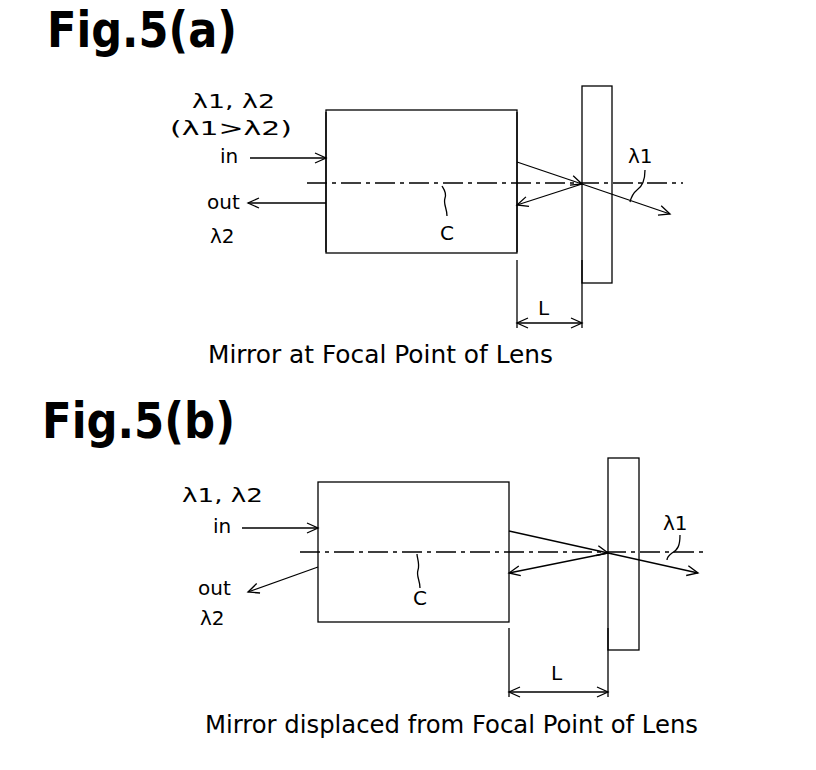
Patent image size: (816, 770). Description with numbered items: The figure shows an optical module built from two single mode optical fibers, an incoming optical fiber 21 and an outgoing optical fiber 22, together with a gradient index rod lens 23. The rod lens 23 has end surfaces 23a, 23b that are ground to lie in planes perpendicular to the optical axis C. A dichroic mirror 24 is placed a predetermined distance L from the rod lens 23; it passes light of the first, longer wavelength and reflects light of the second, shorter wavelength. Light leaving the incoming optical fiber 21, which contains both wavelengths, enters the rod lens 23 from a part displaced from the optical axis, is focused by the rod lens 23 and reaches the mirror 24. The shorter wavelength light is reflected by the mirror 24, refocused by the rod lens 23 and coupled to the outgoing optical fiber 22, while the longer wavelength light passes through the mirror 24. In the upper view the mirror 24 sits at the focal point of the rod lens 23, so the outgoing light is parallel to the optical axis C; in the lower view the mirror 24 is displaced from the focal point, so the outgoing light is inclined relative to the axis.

The incoming optical fiber 21 is at (295, 157).
The outgoing optical fiber 22 is at (297, 205).
The gradient index rod lens 23 is at (398, 119).
The end surface 23a is at (325, 240).
The end surface 23b is at (518, 132).
The mirror 24 is at (598, 86).